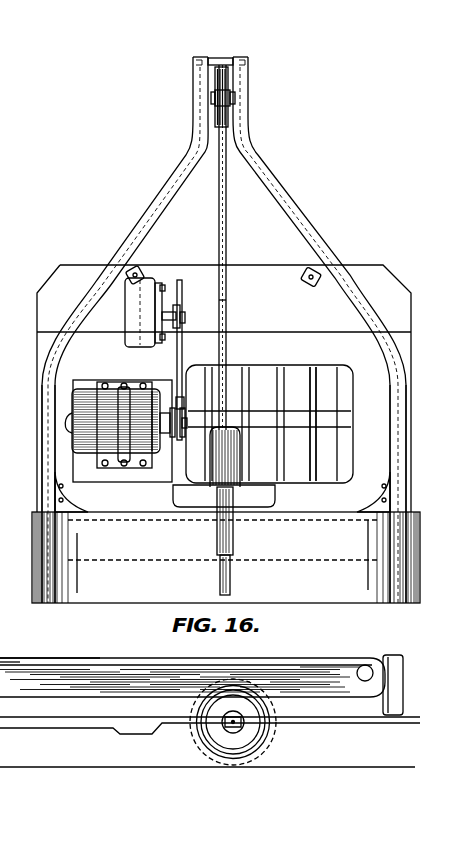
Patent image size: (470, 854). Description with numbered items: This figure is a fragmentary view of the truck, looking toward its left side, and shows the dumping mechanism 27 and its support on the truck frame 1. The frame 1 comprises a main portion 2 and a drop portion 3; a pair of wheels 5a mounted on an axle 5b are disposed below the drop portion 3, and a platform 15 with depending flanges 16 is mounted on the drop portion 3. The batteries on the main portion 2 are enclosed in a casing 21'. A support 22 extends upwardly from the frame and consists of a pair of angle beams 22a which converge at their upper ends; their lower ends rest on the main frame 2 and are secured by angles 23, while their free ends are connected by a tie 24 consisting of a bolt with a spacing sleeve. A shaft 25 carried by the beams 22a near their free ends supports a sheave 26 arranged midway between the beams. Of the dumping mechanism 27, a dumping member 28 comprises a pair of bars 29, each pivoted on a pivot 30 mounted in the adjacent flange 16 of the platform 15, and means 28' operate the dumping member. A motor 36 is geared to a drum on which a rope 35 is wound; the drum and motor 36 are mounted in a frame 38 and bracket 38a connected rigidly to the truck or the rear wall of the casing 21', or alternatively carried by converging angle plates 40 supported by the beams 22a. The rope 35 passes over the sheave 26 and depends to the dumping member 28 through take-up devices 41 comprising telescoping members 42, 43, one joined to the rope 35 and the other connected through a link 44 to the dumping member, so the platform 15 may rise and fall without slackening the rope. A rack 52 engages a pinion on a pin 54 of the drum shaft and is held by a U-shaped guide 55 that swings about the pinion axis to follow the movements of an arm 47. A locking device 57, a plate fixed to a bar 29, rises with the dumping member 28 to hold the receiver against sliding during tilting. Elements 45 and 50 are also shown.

The truck frame 1 is at (259, 496).
The main portion 2 is at (120, 519).
The drop portion 3 is at (390, 718).
The wheels 5a is at (199, 727).
The axle 5b is at (245, 726).
The platform 15 is at (11, 656).
The depending sides or flanges 16 is at (44, 706).
The casing 21' is at (243, 388).
The support 22 is at (224, 412).
The angle plates or beams 22a is at (286, 178).
The angles 23 is at (45, 497).
The tie 24 is at (222, 60).
The shaft 25 is at (238, 98).
The sheave 26 is at (215, 118).
The dumping mechanism 27 is at (237, 313).
The dumping member 28 is at (192, 663).
The operating means 28' is at (269, 411).
The bars 29 is at (116, 668).
The pivot 30 is at (365, 665).
The rope 35 is at (219, 214).
The motor 36 is at (88, 396).
The frame 38 is at (325, 457).
The bracket 38a is at (173, 446).
The converging angle plates 40 is at (138, 274).
The take-up devices 41 is at (226, 557).
The outer telescoping member 42 is at (215, 533).
The inner telescoping member 43 is at (220, 580).
The link 44 is at (236, 458).
The control box 45 is at (132, 312).
The arm 47 is at (162, 320).
The disc 50 is at (186, 318).
The rack 52 is at (182, 286).
The pin 54 is at (165, 407).
The guide 55 is at (184, 408).
The locking device 57 is at (3, 634).